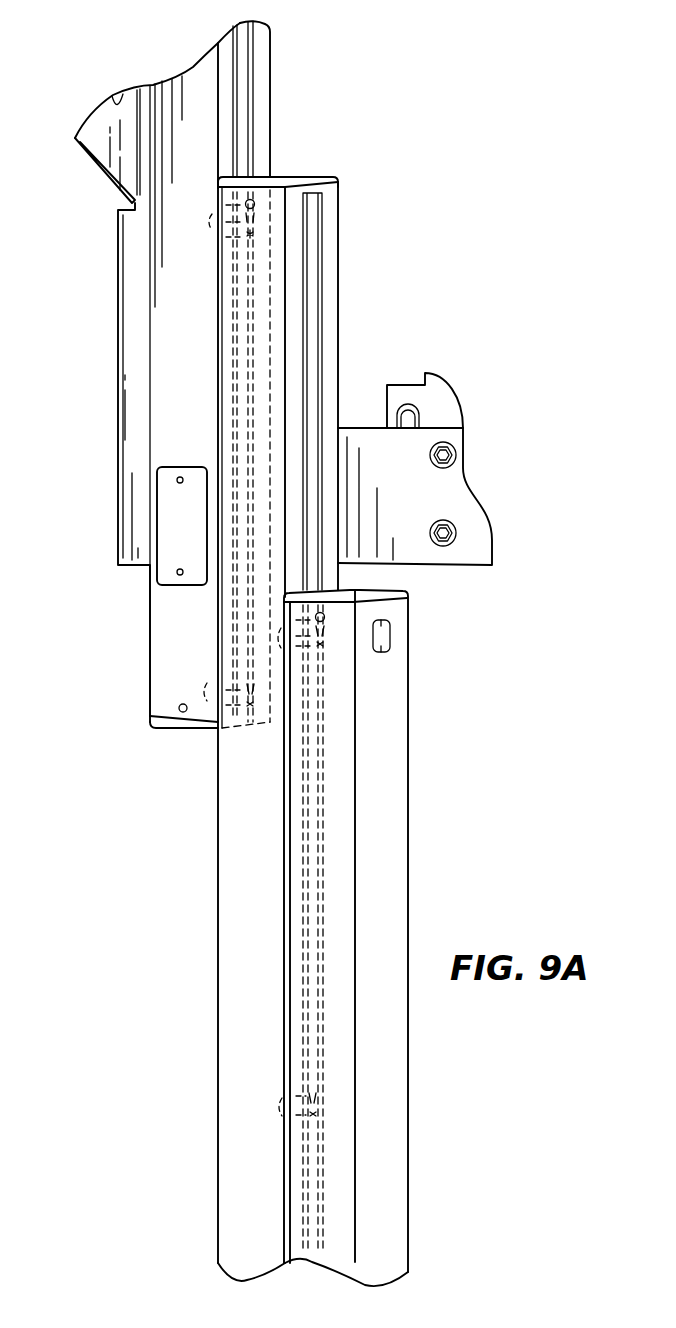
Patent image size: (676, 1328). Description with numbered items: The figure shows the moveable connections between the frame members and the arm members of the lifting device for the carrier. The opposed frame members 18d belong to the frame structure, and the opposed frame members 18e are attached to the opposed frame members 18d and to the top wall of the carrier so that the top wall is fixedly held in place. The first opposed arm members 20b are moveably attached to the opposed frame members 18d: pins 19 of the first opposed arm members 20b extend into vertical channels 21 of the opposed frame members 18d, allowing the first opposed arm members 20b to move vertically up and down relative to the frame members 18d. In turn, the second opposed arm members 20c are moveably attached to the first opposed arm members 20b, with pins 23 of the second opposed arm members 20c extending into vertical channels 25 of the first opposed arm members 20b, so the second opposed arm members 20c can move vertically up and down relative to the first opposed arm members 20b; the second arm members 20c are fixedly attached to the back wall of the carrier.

The opposed frame members 18d is at (177, 340).
The opposed frame members 18e is at (100, 153).
The pins 19 is at (213, 220).
The vertical channels 21 is at (242, 92).
The vertical channels 25 is at (312, 288).
The pins 23 is at (273, 632).
The first opposed arm members 20b is at (253, 788).
The second opposed arm members 20c is at (335, 750).